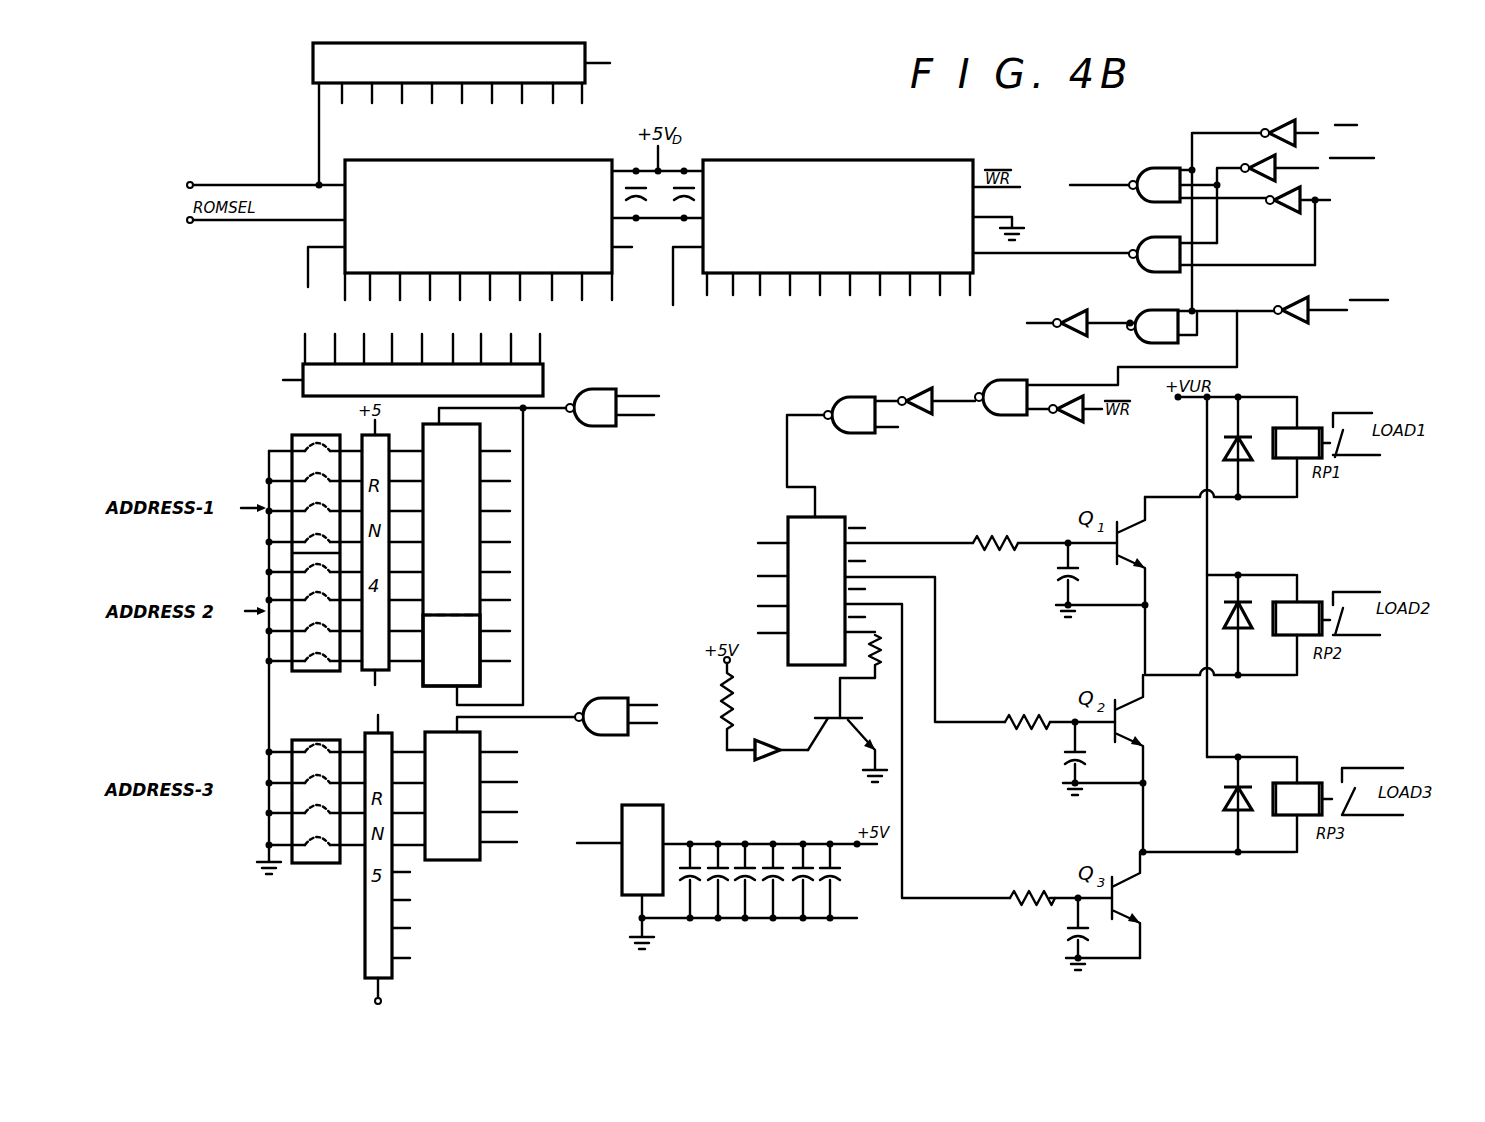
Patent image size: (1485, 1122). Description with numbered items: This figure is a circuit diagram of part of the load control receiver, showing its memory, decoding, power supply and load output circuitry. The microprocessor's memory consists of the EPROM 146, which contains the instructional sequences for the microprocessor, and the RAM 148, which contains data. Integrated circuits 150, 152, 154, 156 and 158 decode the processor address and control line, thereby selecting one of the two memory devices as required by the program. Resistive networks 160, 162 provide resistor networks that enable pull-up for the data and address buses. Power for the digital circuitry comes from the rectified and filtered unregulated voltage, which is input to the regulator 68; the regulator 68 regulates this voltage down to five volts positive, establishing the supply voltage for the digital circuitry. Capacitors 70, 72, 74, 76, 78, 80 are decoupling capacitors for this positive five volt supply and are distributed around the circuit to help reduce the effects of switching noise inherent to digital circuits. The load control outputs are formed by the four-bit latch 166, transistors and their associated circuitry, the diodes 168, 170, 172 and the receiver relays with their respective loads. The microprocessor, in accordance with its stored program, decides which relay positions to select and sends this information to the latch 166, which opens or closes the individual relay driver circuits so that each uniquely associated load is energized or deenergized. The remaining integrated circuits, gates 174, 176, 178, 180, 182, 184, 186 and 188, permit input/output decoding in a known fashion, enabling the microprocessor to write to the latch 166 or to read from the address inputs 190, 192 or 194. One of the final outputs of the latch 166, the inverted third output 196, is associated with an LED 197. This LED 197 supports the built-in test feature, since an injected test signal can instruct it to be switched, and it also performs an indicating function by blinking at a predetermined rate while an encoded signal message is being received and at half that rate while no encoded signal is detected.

The EPROM 146 is at (488, 262).
The RAM 148 is at (860, 262).
The integrated circuit 150 is at (1161, 184).
The integrated circuit 152 is at (1222, 254).
The integrated circuit 154 is at (1290, 106).
The integrated circuit 156 is at (1254, 168).
The integrated circuit 158 is at (1288, 214).
The resistive network 160 is at (441, 395).
The resistive network 162 is at (472, 79).
The four-bit latch 166 is at (830, 601).
The diode 168 is at (1232, 451).
The diode 170 is at (1223, 622).
The diode 172 is at (1227, 797).
The gate 174 is at (1296, 323).
The gate 176 is at (1202, 326).
The gate 178 is at (1096, 310).
The gate 180 is at (1014, 397).
The gate 182 is at (930, 378).
The gate 184 is at (874, 419).
The gate 186 is at (622, 408).
The gate 188 is at (624, 716).
The address input 190 is at (468, 531).
The address input 192 is at (468, 669).
The address input 194 is at (468, 799).
The output Q3 196 is at (830, 738).
The LED 197 is at (753, 763).
The regulator 68 is at (652, 862).
The decoupling capacitor 70 is at (687, 862).
The decoupling capacitor 72 is at (716, 862).
The decoupling capacitor 74 is at (741, 862).
The decoupling capacitor 76 is at (769, 862).
The decoupling capacitor 78 is at (801, 863).
The decoupling capacitor 80 is at (831, 863).